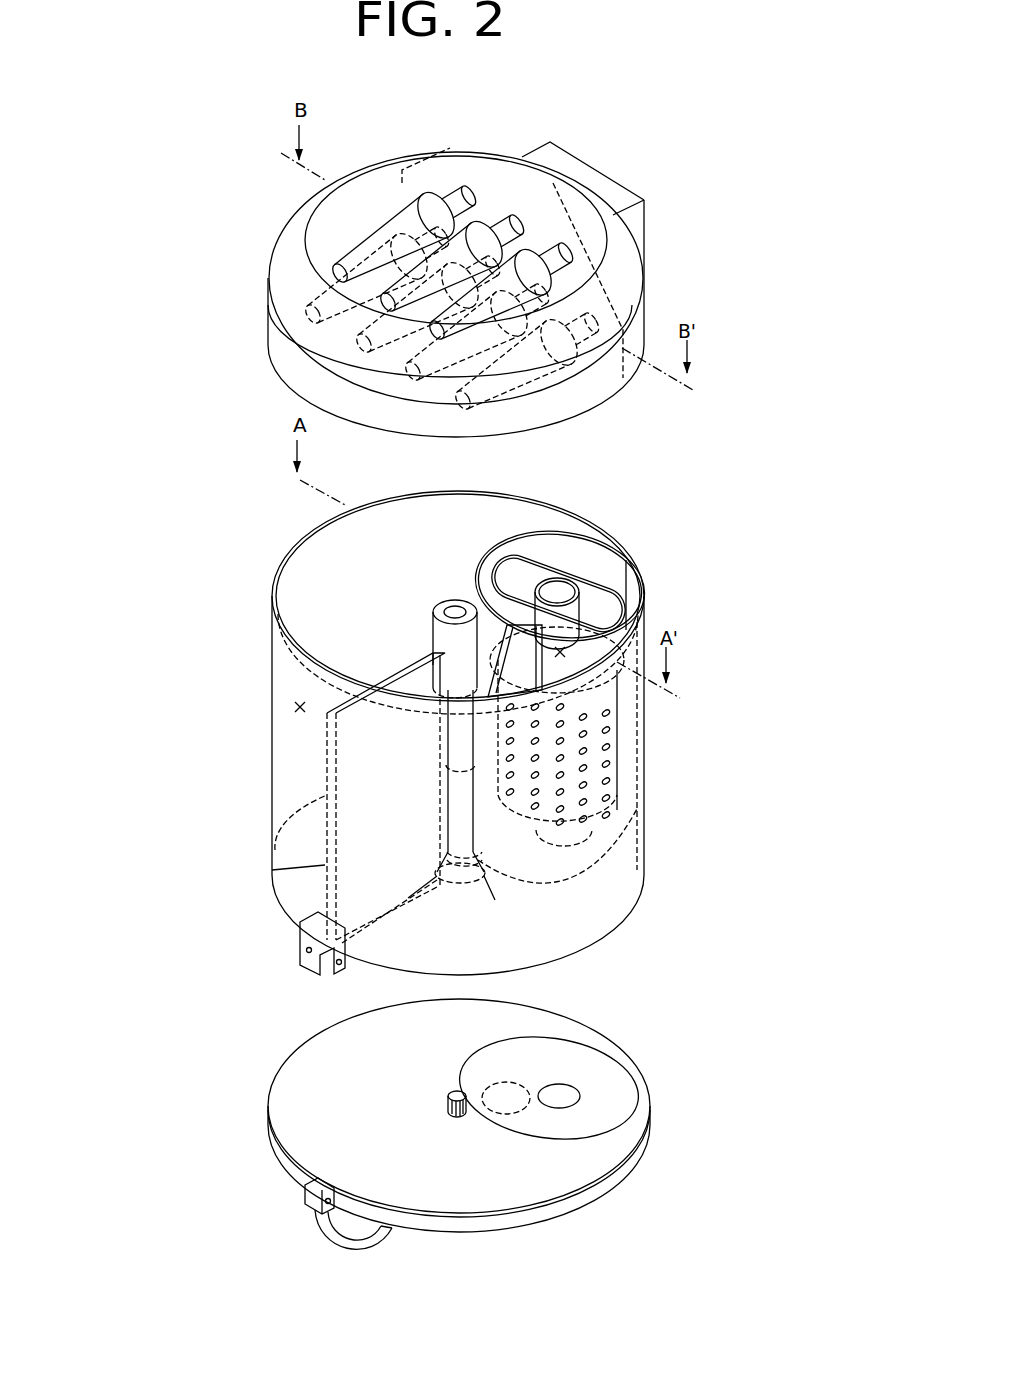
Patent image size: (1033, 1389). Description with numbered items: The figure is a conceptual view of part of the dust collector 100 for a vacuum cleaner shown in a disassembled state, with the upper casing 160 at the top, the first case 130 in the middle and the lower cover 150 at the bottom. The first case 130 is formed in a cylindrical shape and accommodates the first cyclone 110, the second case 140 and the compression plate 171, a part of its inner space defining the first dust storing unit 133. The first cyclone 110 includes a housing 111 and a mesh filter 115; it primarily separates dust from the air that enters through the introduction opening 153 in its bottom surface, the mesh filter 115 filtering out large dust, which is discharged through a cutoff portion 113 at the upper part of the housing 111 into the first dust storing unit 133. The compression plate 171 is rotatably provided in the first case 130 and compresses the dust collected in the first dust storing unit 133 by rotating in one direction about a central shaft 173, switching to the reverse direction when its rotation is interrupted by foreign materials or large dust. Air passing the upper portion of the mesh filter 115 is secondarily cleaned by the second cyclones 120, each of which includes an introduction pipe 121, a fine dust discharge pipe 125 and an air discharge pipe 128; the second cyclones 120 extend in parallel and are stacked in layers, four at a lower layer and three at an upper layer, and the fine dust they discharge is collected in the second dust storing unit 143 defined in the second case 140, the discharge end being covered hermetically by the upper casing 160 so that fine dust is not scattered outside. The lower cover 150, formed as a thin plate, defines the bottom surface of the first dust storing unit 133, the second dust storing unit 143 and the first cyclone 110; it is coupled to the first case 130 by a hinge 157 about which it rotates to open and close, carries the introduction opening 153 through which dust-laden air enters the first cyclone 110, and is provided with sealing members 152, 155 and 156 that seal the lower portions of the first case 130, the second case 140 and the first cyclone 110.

The dust collector 100 is at (152, 408).
The first cyclone 110 is at (707, 713).
The housing 111 is at (640, 752).
The cutoff portion 113 is at (617, 687).
The mesh filter 115 is at (613, 785).
The second cyclone 120 is at (600, 98).
The introduction pipe 121 is at (535, 250).
The fine dust discharge pipe 125 is at (497, 262).
The air discharge pipe 128 is at (562, 242).
The first case 130 is at (272, 732).
The first dust storing unit 133 is at (296, 705).
The second case 140 is at (600, 570).
The second dust storing unit 143 is at (560, 650).
The lower cover 150 is at (513, 1180).
The sealing member 152 is at (573, 1193).
The introduction opening 153 is at (525, 1087).
The sealing member 155 is at (617, 1120).
The sealing member 156 is at (578, 1094).
The hinge 157 is at (303, 1192).
The upper casing 160 is at (288, 243).
The compression plate 171 is at (330, 862).
The central shaft 173 is at (473, 880).